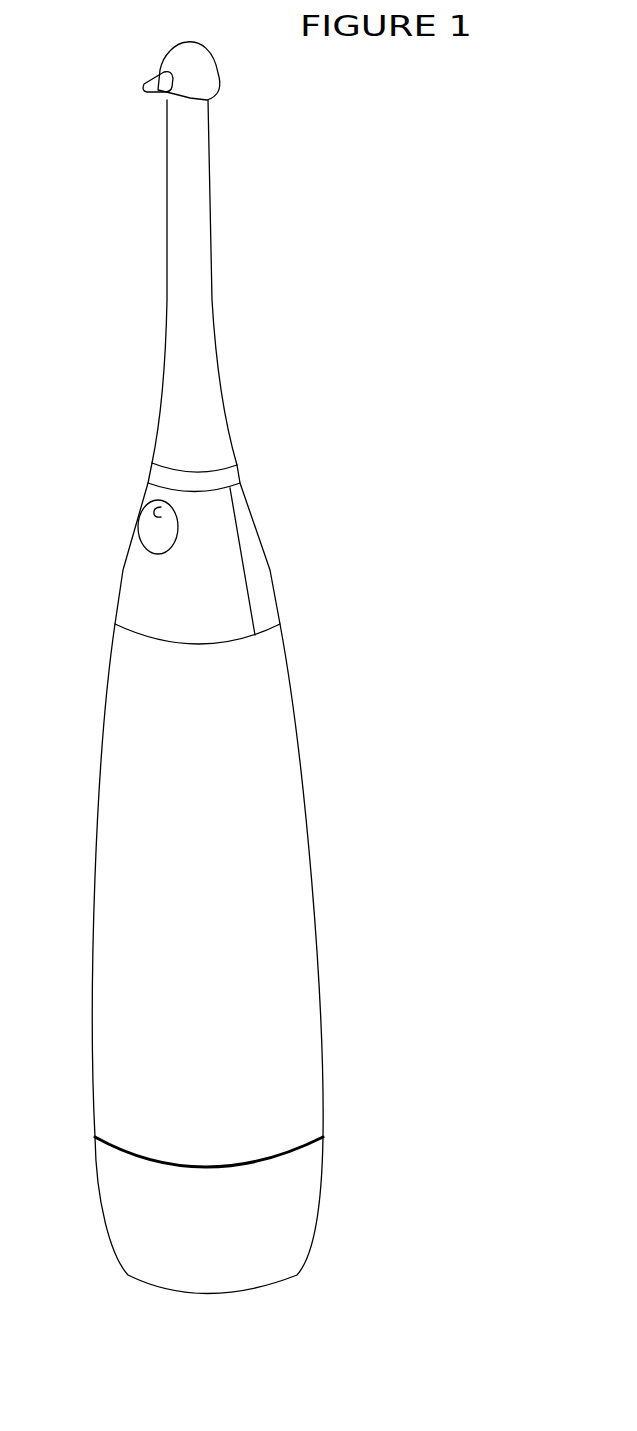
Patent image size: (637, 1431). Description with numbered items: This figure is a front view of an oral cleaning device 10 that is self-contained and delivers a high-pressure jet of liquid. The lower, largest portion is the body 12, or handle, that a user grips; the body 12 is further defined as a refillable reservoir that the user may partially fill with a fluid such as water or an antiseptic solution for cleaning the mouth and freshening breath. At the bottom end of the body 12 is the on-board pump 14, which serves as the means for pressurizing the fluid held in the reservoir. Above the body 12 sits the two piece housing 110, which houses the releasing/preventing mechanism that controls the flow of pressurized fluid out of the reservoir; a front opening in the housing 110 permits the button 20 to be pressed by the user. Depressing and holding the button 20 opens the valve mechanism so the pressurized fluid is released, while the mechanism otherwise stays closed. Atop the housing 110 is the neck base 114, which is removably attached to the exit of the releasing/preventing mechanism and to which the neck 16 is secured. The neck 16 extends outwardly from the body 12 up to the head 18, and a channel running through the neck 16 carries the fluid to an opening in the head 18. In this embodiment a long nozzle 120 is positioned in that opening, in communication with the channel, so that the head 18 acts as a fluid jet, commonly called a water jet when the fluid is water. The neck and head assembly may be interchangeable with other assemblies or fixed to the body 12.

The oral cleaning device 10 is at (332, 204).
The body 12 is at (287, 811).
The on-board pump 14 is at (350, 1185).
The neck 16 is at (205, 301).
The head 18 is at (239, 94).
The button 20 is at (158, 526).
The two piece housing 110 is at (250, 525).
The neck base 114 is at (235, 476).
The long nozzle 120 is at (143, 85).